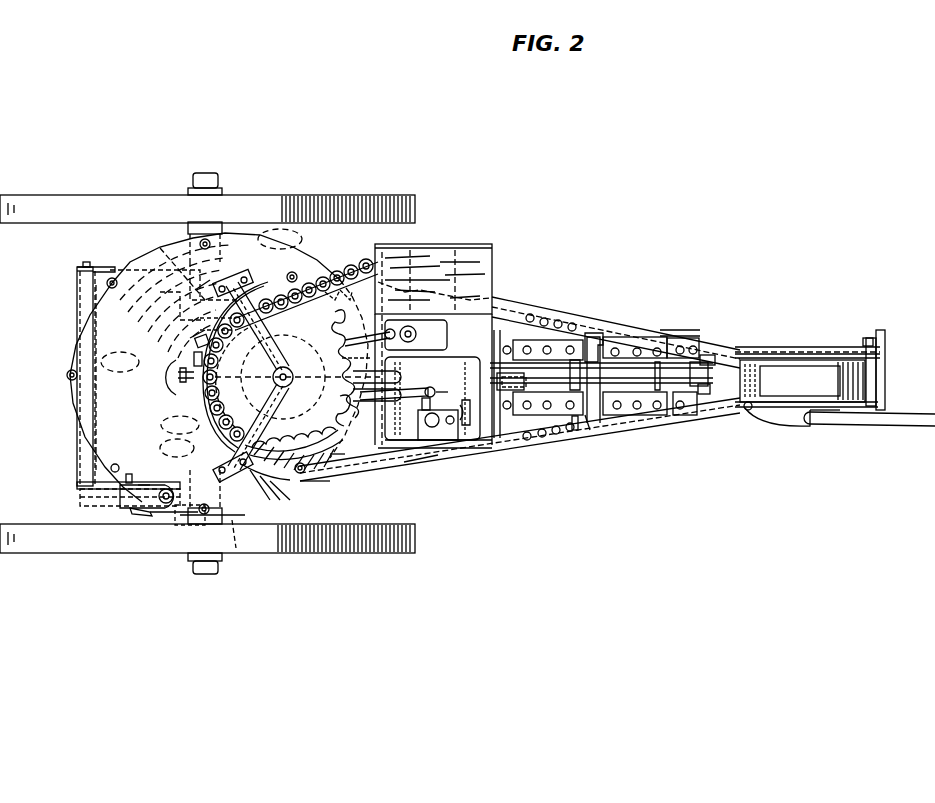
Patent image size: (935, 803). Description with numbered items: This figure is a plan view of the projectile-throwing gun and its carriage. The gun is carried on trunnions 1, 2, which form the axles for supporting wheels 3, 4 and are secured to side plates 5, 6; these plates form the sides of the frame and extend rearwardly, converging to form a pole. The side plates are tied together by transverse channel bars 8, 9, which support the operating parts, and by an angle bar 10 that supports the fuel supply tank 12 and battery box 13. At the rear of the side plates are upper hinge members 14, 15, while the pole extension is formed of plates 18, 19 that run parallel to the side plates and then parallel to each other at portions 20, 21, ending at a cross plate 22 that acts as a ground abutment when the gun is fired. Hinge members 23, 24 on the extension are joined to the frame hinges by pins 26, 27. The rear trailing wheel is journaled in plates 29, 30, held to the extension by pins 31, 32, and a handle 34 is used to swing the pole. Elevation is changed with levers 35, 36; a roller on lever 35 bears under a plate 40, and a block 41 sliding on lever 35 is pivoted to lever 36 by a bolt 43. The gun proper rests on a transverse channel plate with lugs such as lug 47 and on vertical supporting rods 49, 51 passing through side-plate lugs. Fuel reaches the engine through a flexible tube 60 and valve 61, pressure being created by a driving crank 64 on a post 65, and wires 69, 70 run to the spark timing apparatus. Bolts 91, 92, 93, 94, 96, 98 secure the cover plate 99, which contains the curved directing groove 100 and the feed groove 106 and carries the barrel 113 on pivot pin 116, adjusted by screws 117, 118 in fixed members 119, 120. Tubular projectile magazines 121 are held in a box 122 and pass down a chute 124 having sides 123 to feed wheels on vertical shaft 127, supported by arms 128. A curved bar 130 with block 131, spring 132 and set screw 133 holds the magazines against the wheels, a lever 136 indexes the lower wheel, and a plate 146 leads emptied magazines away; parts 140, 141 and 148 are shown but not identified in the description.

The trunnion 1 is at (196, 240).
The trunnion 2 is at (213, 515).
The supporting wheel 3 is at (78, 216).
The supporting wheel 4 is at (92, 553).
The side plate 5 is at (104, 267).
The side plate 6 is at (77, 486).
The transverse channel bar 8 is at (77, 462).
The transverse channel bar 9 is at (342, 456).
The angle bar 10 is at (386, 460).
The fuel supply tank 12 is at (457, 366).
The battery box 13 is at (430, 333).
The hinge member 14 is at (562, 348).
The hinge member 15 is at (574, 430).
The plate 18 is at (634, 334).
The plate 19 is at (643, 416).
The parallel portion of pole extension plate 20 is at (798, 347).
The parallel portion of pole extension plate 21 is at (760, 412).
The cross plate 22 is at (885, 370).
The hinge member 23 is at (672, 338).
The hinge member 24 is at (630, 416).
The pin 26 is at (589, 438).
The pin 27 is at (604, 326).
The plate 29 is at (840, 352).
The plate 30 is at (834, 406).
The pin 31 is at (868, 338).
The pin 32 is at (746, 409).
The handle 34 is at (858, 423).
The lever 35 is at (640, 390).
The lever 36 is at (762, 368).
The plate 40 is at (543, 392).
The block 41 is at (702, 394).
The bolt 43 is at (705, 362).
The lug 47 is at (200, 514).
The vertical supporting rod 49 is at (158, 244).
The vertical supporting rod 51 is at (236, 549).
The flexible tube 60 is at (408, 390).
The valve 61 is at (425, 428).
The driving crank 64 is at (424, 452).
The post 65 is at (465, 404).
The wire 69 is at (357, 338).
The wire 70 is at (357, 349).
The bolt 91 is at (68, 377).
The bolt 92 is at (108, 284).
The bolt 93 is at (212, 245).
The bolt 94 is at (296, 273).
The bolt 96 is at (304, 472).
The bolt 98 is at (115, 463).
The cover plate 99 is at (94, 334).
The curved directing groove 100 is at (180, 425).
The feed groove 106 is at (276, 484).
The barrel 113 is at (84, 505).
The pivot pin 116 is at (166, 488).
The screw 117 is at (135, 468).
The screw 118 is at (134, 517).
The fixed member 119 is at (151, 472).
The fixed member 120 is at (174, 520).
The tubular projectile magazine 121 is at (374, 268).
The box 122 is at (450, 262).
The chute side 123 is at (346, 299).
The chute 124 is at (352, 265).
The vertical shaft 127 is at (287, 372).
The arm 128 is at (251, 319).
The curved bar 130 is at (200, 388).
The block 131 is at (202, 336).
The spring 132 is at (196, 358).
The set screw 133 is at (179, 374).
The lever 136 is at (385, 368).
The rack 140 is at (342, 370).
The rack 141 is at (356, 398).
The plate 146 is at (297, 470).
The shaft 148 is at (120, 362).